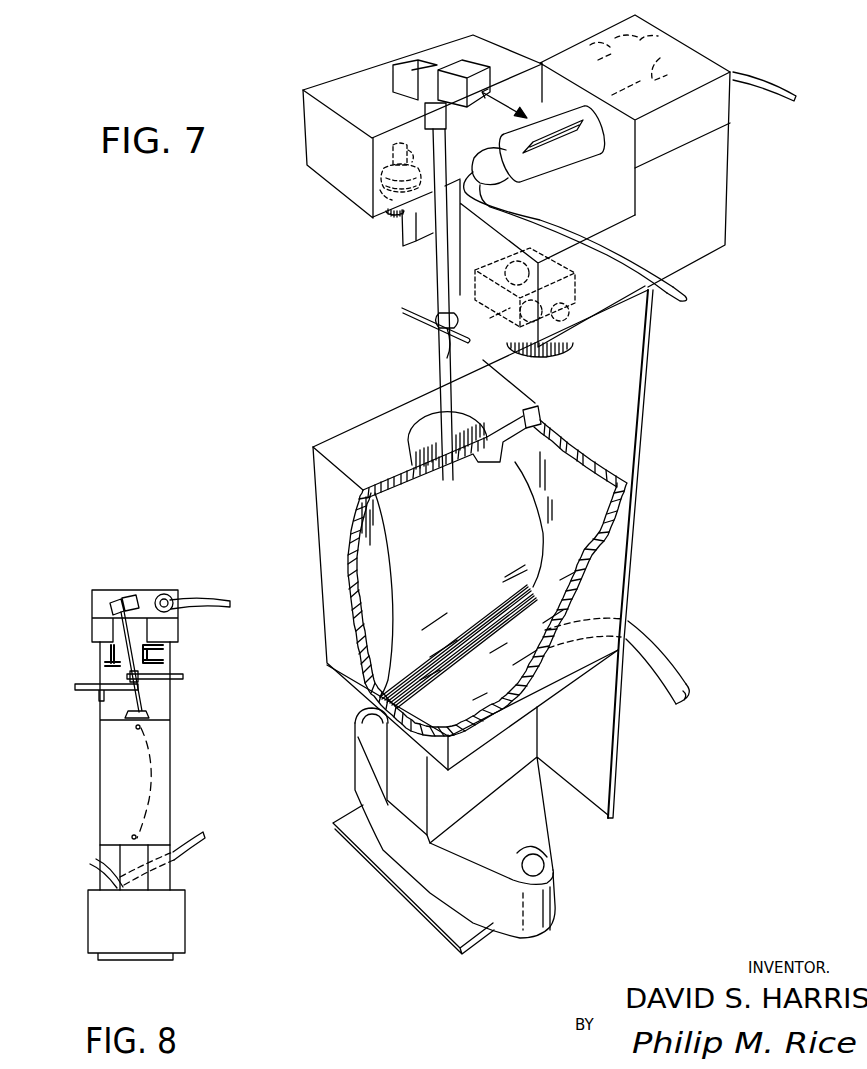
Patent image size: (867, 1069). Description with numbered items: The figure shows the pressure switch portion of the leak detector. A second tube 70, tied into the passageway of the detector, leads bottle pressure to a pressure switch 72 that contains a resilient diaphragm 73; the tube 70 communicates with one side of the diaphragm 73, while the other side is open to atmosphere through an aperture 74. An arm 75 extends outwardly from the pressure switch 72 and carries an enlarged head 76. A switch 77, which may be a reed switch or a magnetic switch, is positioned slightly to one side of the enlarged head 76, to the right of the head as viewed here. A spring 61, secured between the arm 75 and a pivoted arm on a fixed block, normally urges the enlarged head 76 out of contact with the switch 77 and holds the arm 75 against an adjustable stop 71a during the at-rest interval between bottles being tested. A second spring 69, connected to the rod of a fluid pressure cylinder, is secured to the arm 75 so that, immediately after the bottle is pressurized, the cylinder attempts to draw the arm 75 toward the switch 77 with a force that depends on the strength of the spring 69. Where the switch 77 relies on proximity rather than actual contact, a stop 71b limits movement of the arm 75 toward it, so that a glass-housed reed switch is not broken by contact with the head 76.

In FIG. 7, the spring 61 is at (427, 321).
In FIG. 8, the spring 61 is at (100, 690).
In FIG. 7, the spring 69 is at (447, 361).
In FIG. 8, the spring 69 is at (185, 678).
In FIG. 7, the second tube 70 is at (664, 688).
In FIG. 8, the second tube 70 is at (91, 864).
In FIG. 7, the adjustable stop 71a is at (412, 247).
In FIG. 8, the adjustable stop 71a is at (106, 664).
In FIG. 7, the stop 71b is at (472, 303).
In FIG. 8, the stop 71b is at (164, 658).
In FIG. 7, the pressure switch 72 is at (329, 508).
In FIG. 8, the pressure switch 72 is at (173, 737).
In FIG. 7, the resilient diaphragm 73 is at (375, 608).
In FIG. 8, the resilient diaphragm 73 is at (163, 790).
In FIG. 7, the aperture 74 is at (560, 876).
In FIG. 7, the arm 75 is at (437, 274).
In FIG. 8, the arm 75 is at (150, 707).
In FIG. 7, the enlarged head 76 is at (437, 103).
In FIG. 8, the enlarged head 76 is at (113, 594).
In FIG. 7, the switch 77 is at (548, 147).
In FIG. 8, the switch 77 is at (163, 593).